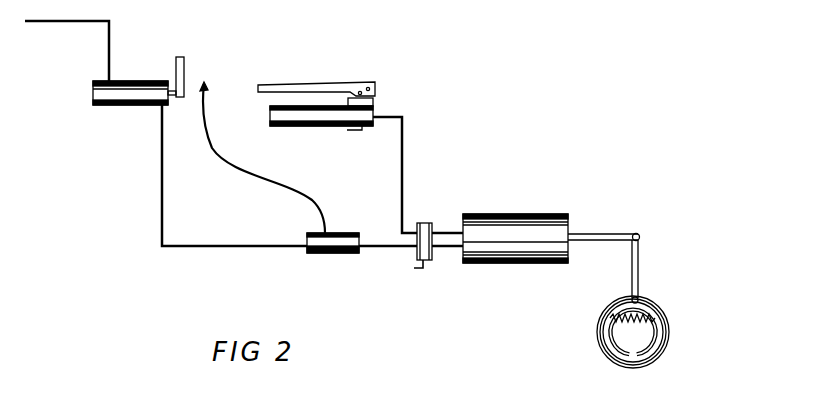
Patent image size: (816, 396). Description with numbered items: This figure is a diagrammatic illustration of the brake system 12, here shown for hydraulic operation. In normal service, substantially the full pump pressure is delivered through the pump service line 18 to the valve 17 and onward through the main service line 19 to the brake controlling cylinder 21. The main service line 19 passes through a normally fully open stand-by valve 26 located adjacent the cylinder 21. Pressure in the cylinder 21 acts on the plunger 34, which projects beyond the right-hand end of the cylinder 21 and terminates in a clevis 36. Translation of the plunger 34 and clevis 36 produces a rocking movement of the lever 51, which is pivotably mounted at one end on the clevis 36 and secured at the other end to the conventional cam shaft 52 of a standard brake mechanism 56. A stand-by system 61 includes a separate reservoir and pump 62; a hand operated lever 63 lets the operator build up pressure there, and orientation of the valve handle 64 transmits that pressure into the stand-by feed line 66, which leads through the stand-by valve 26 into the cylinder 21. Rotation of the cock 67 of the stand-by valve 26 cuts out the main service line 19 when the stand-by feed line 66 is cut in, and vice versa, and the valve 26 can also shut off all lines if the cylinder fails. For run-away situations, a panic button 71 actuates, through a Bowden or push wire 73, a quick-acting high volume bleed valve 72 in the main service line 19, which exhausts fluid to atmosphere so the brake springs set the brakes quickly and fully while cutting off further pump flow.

The brake system 12 is at (522, 119).
The valve 17 is at (137, 80).
The pump service line 18 is at (57, 27).
The main service line 19 is at (241, 248).
The brake controlling cylinder 21 is at (520, 264).
The stand-by valve 26 is at (433, 250).
The plunger 34 is at (605, 233).
The clevis 36 is at (644, 234).
The lever 51 is at (641, 257).
The cam shaft 52 is at (640, 306).
The brake mechanism 56 is at (687, 318).
The stand-by system 61 is at (409, 110).
The reservoir and pump 62 is at (294, 126).
The hand operated lever 63 is at (306, 83).
The valve handle 64 is at (357, 131).
The stand-by feed line 66 is at (410, 147).
The cock 67 is at (415, 272).
The panic button 71 is at (205, 83).
The bleed valve 72 is at (322, 256).
The push wire 73 is at (210, 148).